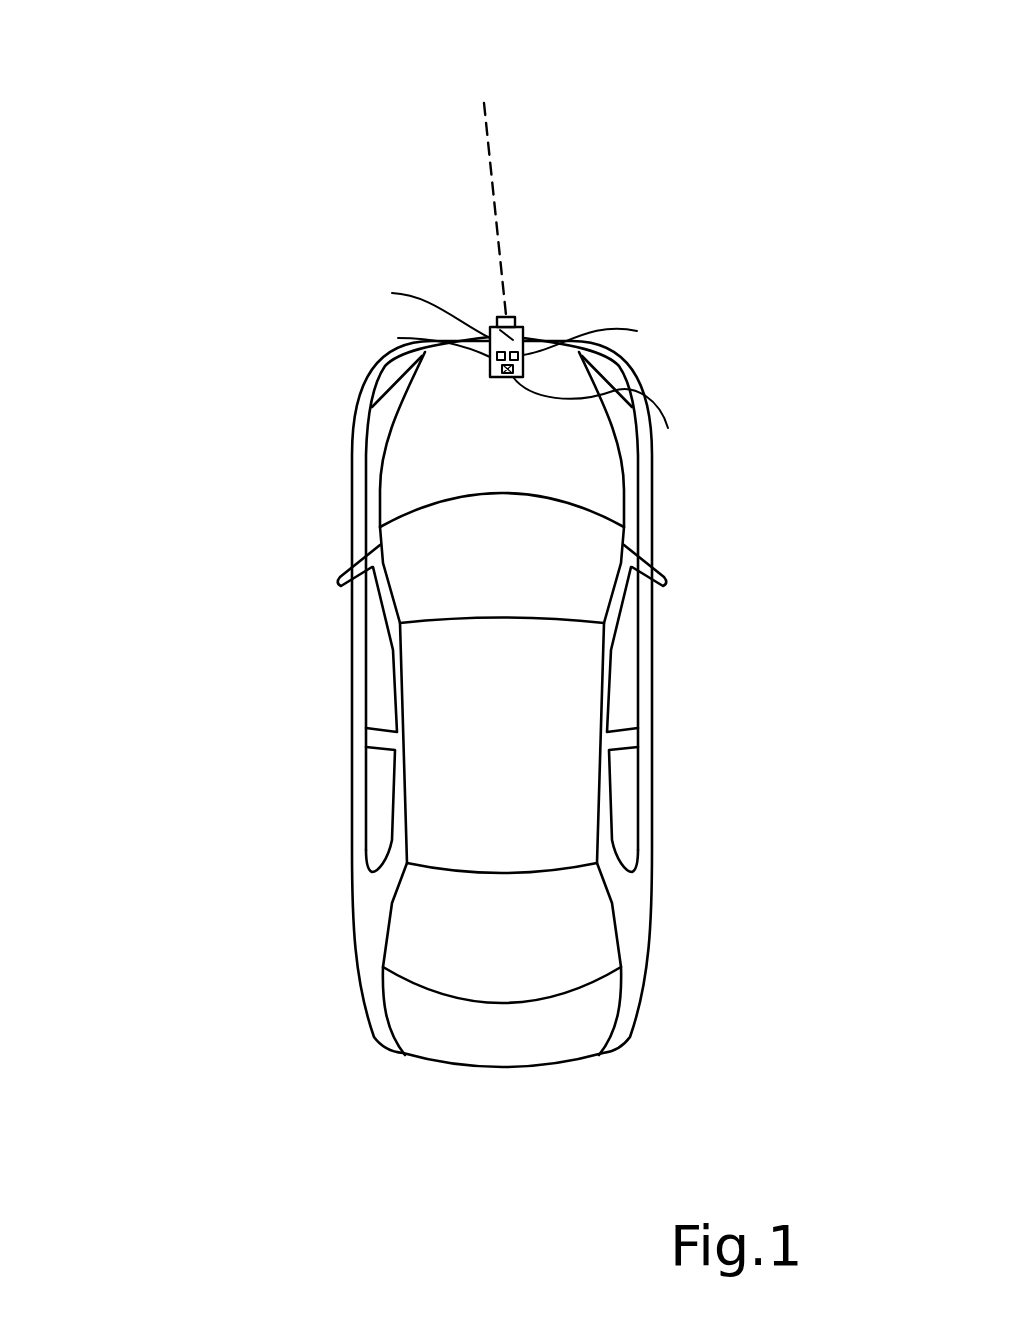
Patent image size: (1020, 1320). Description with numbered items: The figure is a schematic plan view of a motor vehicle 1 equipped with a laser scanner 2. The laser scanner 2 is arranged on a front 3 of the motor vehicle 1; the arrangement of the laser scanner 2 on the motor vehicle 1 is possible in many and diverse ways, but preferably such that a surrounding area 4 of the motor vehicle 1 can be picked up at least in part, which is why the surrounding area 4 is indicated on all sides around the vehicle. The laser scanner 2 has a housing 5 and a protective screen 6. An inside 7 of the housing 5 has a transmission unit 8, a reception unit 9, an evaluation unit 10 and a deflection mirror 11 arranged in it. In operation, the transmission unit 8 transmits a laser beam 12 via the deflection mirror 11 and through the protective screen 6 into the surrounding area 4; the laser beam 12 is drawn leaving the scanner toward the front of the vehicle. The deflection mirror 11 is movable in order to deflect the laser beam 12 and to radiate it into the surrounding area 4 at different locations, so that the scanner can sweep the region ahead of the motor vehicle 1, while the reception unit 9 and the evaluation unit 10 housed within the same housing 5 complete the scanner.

The motor vehicle 1 is at (662, 371).
The laser scanner 2 is at (542, 308).
The front 3 is at (464, 296).
The surrounding area 4 is at (502, 53).
The housing 5 is at (523, 330).
The protective screen 6 is at (507, 309).
The inside 7 is at (527, 336).
The transmission unit 8 is at (431, 339).
The reception unit 9 is at (589, 335).
The evaluation unit 10 is at (605, 419).
The deflection mirror 11 is at (422, 306).
The laser beam 12 is at (492, 168).